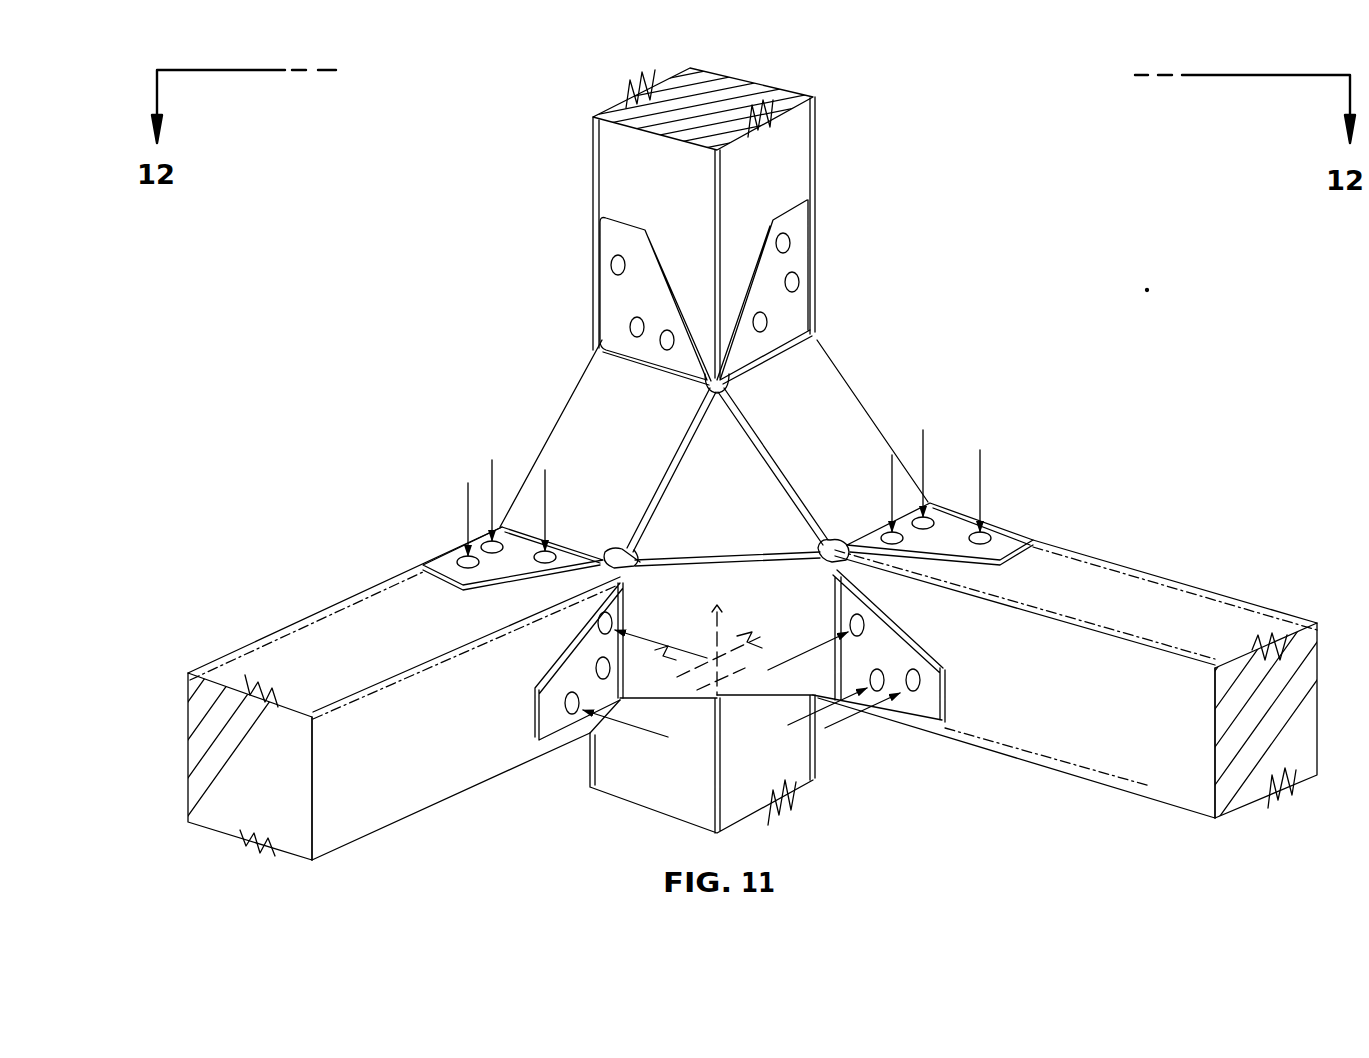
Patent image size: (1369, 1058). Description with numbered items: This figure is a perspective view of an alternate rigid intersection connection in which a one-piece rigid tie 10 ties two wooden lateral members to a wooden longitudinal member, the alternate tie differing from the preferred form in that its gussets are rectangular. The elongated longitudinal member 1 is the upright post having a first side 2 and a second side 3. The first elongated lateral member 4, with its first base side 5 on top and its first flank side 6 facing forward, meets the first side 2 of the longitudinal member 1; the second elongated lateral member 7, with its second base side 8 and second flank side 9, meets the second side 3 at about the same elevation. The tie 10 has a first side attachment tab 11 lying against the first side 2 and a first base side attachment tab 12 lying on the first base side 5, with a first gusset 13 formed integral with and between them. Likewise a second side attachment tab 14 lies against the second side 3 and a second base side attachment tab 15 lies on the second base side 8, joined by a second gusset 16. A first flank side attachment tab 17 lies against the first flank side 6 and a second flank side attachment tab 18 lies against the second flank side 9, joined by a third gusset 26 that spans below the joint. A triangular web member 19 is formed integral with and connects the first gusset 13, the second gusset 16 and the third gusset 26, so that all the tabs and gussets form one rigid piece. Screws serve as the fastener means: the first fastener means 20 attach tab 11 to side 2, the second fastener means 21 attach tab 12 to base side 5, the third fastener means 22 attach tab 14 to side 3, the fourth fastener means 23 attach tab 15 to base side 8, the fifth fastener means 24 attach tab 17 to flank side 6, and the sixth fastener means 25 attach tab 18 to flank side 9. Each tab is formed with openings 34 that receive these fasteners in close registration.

The elongated longitudinal member 1 is at (590, 188).
The first side 2 is at (672, 191).
The second side 3 is at (782, 181).
The first elongated lateral member 4 is at (262, 638).
The first base side 5 is at (397, 642).
The first flank side 6 is at (397, 766).
The second elongated lateral member 7 is at (1140, 562).
The second base side 8 is at (1212, 642).
The second flank side 9 is at (1162, 736).
The one-piece rigid tie 10 is at (785, 216).
The first side attachment tab 11 is at (603, 232).
The first base side attachment tab 12 is at (423, 565).
The first gusset 13 is at (577, 418).
The second side attachment tab 14 is at (790, 220).
The second base side attachment tab 15 is at (1025, 540).
The second gusset 16 is at (855, 392).
The first flank side attachment tab 17 is at (535, 715).
The second flank side attachment tab 18 is at (947, 703).
The triangular web member 19 is at (747, 470).
The first fastener means 20 is at (627, 332).
The second fastener means 21 is at (492, 498).
The third fastener means 22 is at (770, 325).
The fourth fastener means 23 is at (1000, 460).
The fifth fastener means 24 is at (657, 642).
The sixth fastener means 25 is at (825, 728).
The third gusset 26 is at (750, 687).
The openings 34 is at (664, 337).